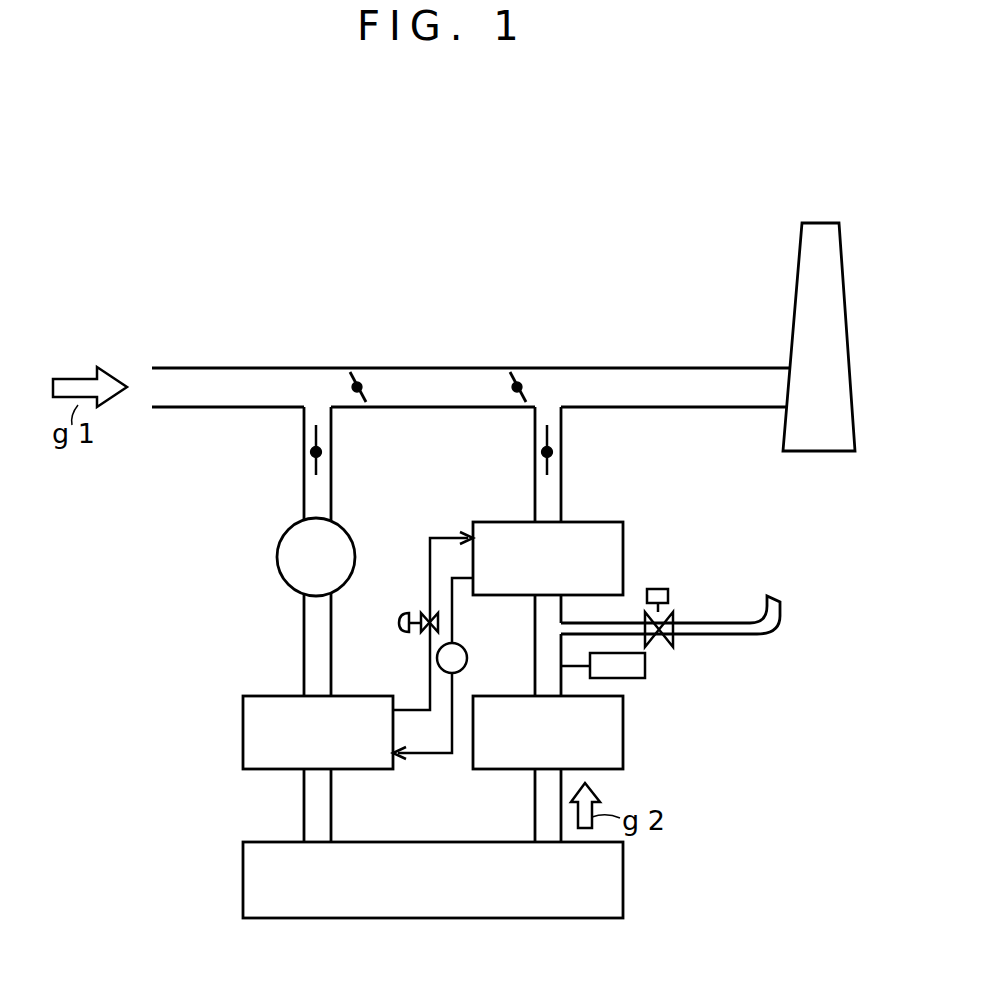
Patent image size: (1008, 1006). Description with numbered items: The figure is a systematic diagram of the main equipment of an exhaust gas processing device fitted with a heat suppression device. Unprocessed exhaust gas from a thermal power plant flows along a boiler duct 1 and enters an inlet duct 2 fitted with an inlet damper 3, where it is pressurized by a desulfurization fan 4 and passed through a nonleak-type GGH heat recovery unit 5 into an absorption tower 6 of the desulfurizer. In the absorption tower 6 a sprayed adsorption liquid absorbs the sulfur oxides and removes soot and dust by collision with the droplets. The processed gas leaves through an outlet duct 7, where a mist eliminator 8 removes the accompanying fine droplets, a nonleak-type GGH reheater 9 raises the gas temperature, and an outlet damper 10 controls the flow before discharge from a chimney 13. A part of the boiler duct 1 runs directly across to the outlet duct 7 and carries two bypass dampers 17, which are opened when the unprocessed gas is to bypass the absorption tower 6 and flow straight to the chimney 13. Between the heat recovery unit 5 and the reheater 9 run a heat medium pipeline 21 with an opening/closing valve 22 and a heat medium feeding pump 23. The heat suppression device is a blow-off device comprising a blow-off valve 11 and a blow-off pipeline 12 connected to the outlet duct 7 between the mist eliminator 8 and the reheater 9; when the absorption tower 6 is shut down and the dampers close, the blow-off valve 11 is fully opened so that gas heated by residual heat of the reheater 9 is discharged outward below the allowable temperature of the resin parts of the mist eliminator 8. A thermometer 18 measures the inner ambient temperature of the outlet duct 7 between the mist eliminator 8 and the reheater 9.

The boiler duct 1 is at (444, 368).
The inlet duct 2 is at (304, 503).
The inlet damper 3 is at (316, 428).
The desulfurization fan 4 is at (277, 557).
The GGH heat recovery unit 5 is at (243, 733).
The absorption tower 6 is at (243, 883).
The outlet duct 7 is at (561, 493).
The mist eliminator 8 is at (623, 733).
The GGH reheater 9 is at (506, 522).
The outlet damper 10 is at (549, 428).
The blow-off valve 11 is at (670, 597).
The blow-off pipeline 12 is at (782, 615).
The chimney 13 is at (794, 292).
The bypass damper 17 is at (354, 372).
The thermometer 18 is at (645, 668).
The heat medium pipeline 21 is at (430, 552).
The opening/closing valve 22 is at (398, 627).
The heat medium feeding pump 23 is at (467, 658).